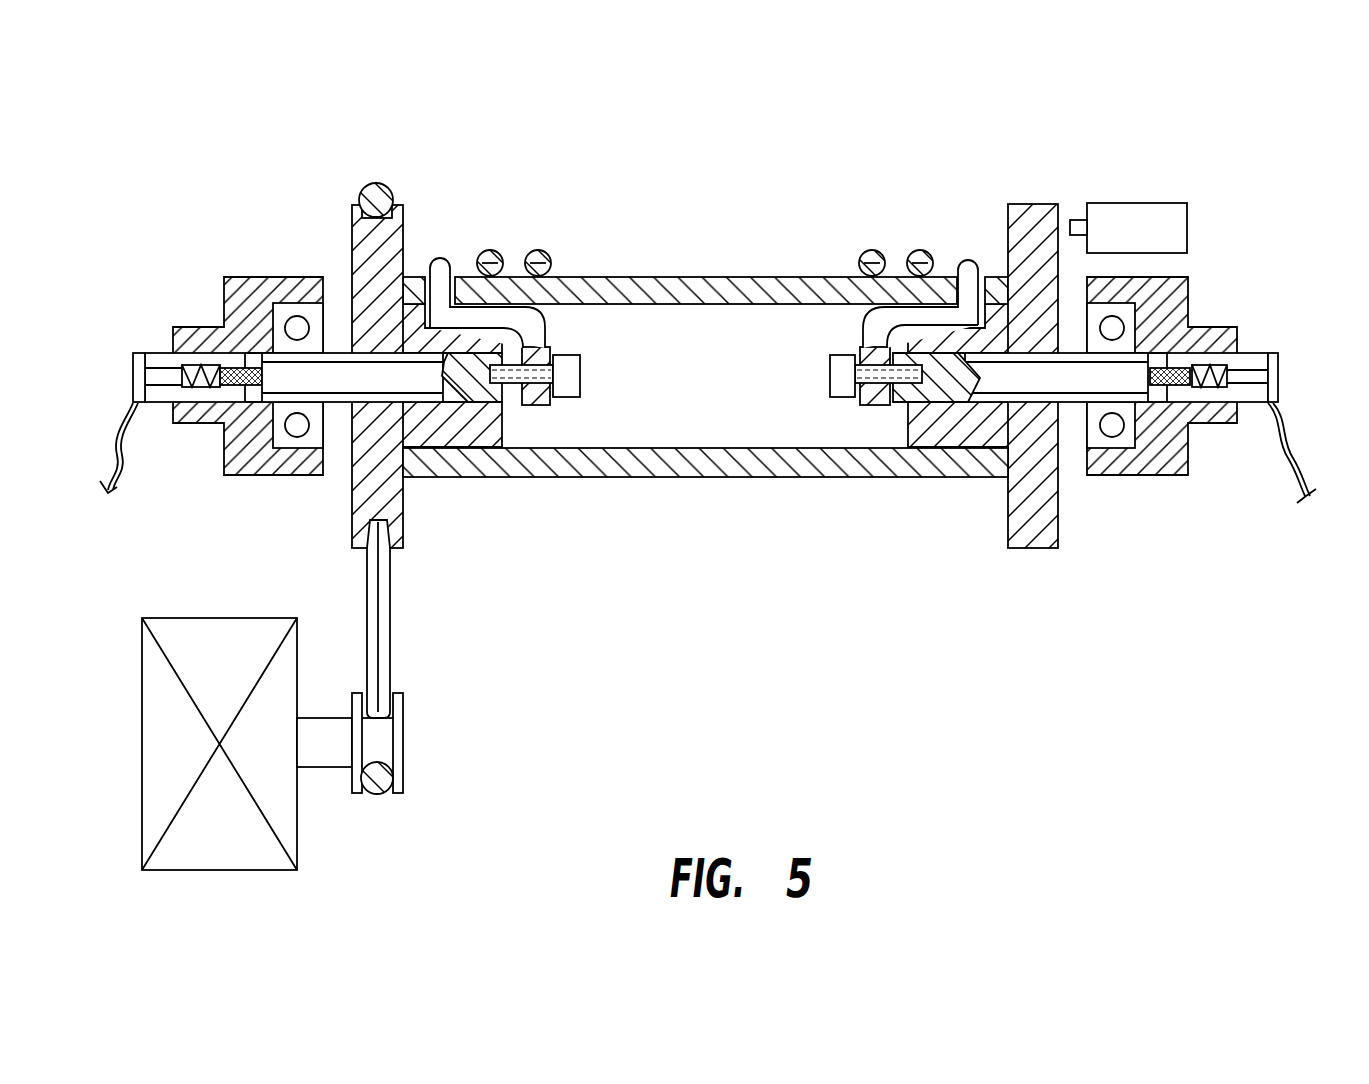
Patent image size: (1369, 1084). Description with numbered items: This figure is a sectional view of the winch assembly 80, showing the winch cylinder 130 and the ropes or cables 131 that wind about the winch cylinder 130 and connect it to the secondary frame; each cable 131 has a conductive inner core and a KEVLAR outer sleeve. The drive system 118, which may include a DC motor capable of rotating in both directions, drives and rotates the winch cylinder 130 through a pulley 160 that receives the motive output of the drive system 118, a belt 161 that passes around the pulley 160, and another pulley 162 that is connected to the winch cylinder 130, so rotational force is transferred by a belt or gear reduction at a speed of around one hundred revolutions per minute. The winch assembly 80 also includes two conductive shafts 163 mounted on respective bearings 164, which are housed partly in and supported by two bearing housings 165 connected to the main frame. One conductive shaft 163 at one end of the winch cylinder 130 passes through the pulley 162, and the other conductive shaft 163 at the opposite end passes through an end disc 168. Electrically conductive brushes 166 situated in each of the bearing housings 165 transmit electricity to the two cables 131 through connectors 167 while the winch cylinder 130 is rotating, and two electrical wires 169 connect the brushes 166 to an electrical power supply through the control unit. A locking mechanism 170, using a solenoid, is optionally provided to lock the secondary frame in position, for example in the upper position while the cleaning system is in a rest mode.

The winch assembly 80 is at (729, 137).
The drive system 118 is at (212, 618).
The winch cylinder 130 is at (732, 278).
The cables 131 is at (445, 268).
The pulley 160 is at (403, 738).
The belt 161 is at (393, 655).
The pulley 162 is at (403, 543).
The conductive shafts 163 is at (338, 353).
The bearings 164 is at (303, 433).
The bearing housings 165 is at (227, 277).
The electrically conductive brushes 166 is at (168, 367).
The connectors 167 is at (582, 370).
The end disc 168 is at (1043, 204).
The electrical wires 169 is at (117, 492).
The locking mechanism 170 is at (1187, 203).